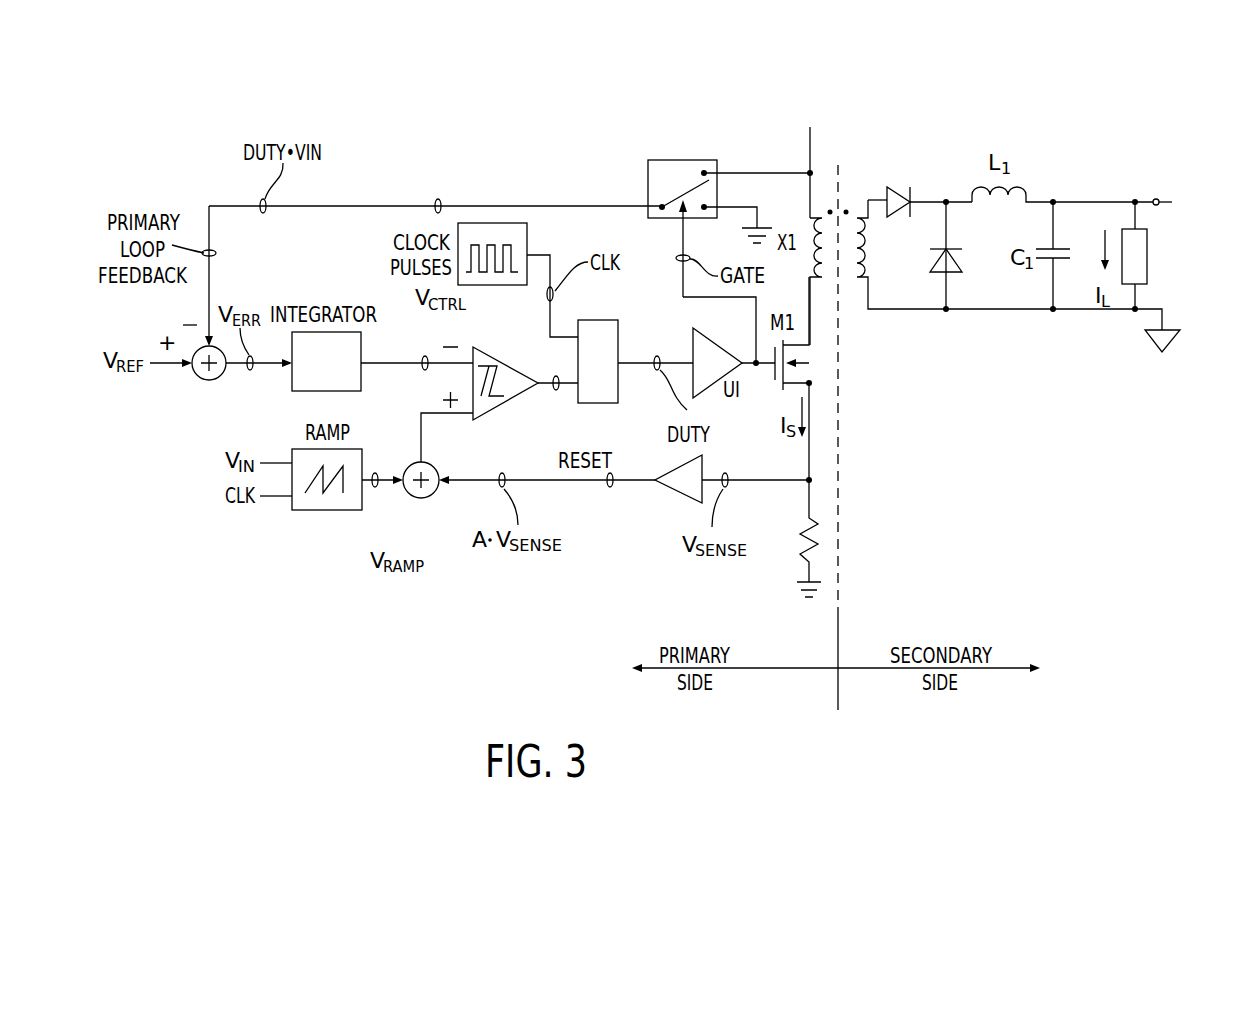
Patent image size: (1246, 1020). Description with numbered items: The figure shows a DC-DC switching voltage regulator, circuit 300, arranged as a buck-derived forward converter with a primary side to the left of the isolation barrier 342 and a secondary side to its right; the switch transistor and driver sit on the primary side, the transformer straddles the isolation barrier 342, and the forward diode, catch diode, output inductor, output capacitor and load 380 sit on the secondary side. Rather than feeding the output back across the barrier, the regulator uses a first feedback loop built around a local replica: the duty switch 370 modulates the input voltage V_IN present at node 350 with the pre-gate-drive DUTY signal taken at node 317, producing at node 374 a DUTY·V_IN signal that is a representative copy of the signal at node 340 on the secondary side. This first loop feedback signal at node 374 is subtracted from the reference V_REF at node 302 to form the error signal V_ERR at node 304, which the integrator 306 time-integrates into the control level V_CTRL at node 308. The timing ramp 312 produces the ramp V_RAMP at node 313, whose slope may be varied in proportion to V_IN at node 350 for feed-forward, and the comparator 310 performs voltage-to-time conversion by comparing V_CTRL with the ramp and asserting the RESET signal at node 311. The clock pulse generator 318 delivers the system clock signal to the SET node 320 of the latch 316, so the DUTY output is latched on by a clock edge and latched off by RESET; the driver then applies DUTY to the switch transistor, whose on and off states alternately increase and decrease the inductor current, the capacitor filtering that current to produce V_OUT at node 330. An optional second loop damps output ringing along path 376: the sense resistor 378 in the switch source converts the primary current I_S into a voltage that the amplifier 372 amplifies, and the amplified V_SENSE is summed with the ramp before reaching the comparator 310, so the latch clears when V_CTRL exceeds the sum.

The circuit 300 is at (181, 140).
The reference signal node 302 is at (199, 377).
The error signal node 304 is at (252, 371).
The integrator 306 is at (358, 391).
The control signal node 308 is at (426, 355).
The comparator 310 is at (505, 402).
The reset signal node 311 is at (560, 391).
The timing ramp 312 is at (328, 511).
The ramp signal node 313 is at (377, 489).
The latch 316 is at (620, 337).
The pre-gate drive signal node 317 is at (654, 371).
The clock pulse generator 318 is at (527, 232).
The SET node 320 is at (553, 310).
The output node 330 is at (1158, 199).
The secondary side node 340 is at (948, 199).
The isolation barrier 342 is at (842, 533).
The input voltage node 350 is at (811, 145).
The duty switch 370 is at (682, 160).
The amplifier 372 is at (676, 490).
The first loop feedback path 374 is at (440, 199).
The second loop feedback path 376 is at (609, 489).
The sense resistor 378 is at (818, 520).
The load 380 is at (1148, 275).